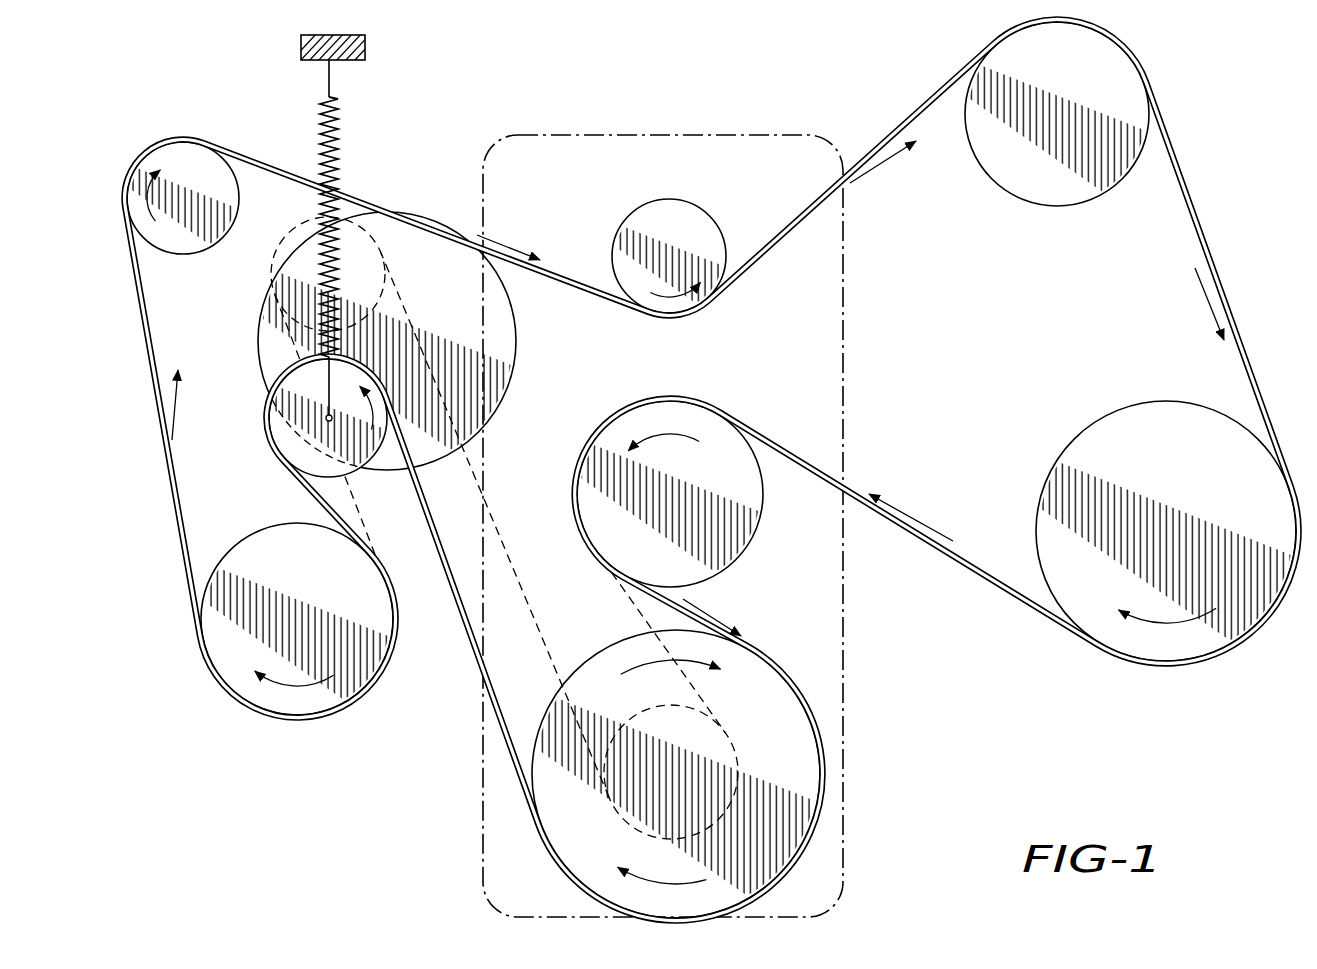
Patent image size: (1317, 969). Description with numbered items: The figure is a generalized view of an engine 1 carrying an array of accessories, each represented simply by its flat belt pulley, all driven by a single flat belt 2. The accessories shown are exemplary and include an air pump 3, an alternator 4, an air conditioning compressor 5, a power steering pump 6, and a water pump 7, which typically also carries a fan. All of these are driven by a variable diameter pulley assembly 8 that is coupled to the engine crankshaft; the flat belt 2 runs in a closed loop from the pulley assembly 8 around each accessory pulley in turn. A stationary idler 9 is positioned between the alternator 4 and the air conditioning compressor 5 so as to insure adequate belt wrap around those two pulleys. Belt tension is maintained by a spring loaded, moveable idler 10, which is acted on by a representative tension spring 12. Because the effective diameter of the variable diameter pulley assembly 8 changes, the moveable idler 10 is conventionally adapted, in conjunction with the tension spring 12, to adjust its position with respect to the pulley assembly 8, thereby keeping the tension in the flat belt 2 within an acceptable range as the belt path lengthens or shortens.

The engine 1 is at (843, 598).
The flat belt 2 is at (476, 654).
The air pump 3 is at (298, 700).
The alternator 4 is at (197, 162).
The air conditioning compressor 5 is at (1020, 178).
The power steering pump 6 is at (1142, 425).
The water pump 7 is at (628, 440).
The variable diameter pulley assembly 8 is at (798, 696).
The stationary idler 9 is at (706, 232).
The moveable idler 10 is at (283, 437).
The tension spring 12 is at (334, 146).